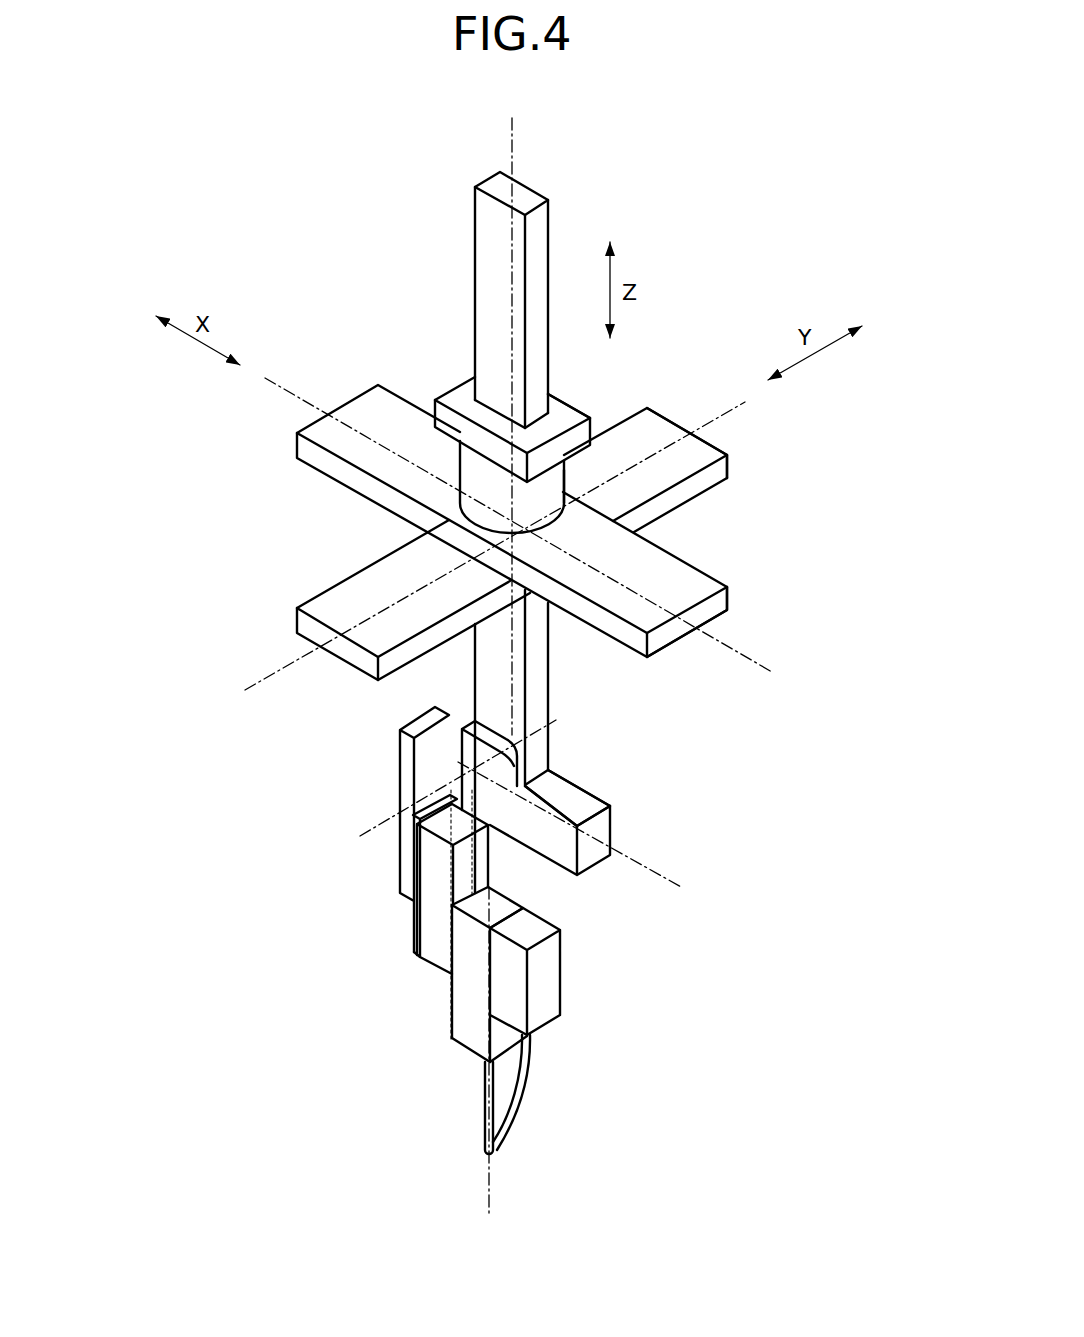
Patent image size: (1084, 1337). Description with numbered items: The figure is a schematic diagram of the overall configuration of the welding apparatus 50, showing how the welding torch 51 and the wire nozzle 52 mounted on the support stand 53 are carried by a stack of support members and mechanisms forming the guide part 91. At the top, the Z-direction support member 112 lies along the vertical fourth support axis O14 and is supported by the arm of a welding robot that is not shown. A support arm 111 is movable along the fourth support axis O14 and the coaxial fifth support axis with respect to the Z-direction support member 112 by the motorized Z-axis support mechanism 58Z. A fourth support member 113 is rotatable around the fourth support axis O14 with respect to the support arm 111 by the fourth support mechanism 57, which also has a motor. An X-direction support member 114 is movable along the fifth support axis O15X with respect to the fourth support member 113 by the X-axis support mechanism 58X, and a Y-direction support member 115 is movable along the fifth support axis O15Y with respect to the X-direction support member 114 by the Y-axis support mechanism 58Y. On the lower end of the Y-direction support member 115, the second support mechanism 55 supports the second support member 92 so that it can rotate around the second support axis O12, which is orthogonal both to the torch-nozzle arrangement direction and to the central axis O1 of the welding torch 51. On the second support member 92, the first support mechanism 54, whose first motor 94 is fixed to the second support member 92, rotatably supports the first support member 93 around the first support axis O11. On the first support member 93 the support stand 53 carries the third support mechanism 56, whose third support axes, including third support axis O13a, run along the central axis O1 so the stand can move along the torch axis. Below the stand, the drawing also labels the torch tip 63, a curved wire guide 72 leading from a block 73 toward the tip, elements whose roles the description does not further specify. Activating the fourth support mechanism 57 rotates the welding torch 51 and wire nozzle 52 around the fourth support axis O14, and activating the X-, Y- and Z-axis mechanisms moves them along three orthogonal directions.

The welding apparatus 50 is at (751, 745).
The welding torch 51 is at (448, 1036).
The wire nozzle 52 is at (542, 1053).
The support stand 53 is at (507, 891).
The first support mechanism 54 is at (414, 713).
The second support mechanism 55 is at (524, 747).
The third support mechanism 56 is at (410, 935).
The fourth support mechanism 57 is at (574, 480).
The X-axis support mechanism 58X is at (372, 503).
The Y-axis support mechanism 58Y is at (337, 580).
The Z-axis support mechanism 58Z is at (577, 394).
The needle 63 is at (487, 1140).
The curved guide 72 is at (513, 1117).
The guide block 73 is at (555, 985).
The guide part 91 is at (735, 507).
The second support member 92 is at (520, 771).
The first support member 93 is at (399, 777).
The first motor 94 is at (592, 843).
The support arm 111 is at (478, 247).
The Z-direction support member 112 is at (463, 395).
The fourth support member 113 is at (472, 468).
The X-direction support member 114 is at (670, 633).
The Y-direction support member 115 is at (552, 672).
The central axis O1 is at (490, 1200).
The first support axis O11 is at (683, 888).
The second support axis O12 is at (386, 815).
The third support axis O13a is at (455, 998).
The fourth support axis O14 is at (514, 150).
The fifth support axis O15X is at (743, 652).
The fifth support axis O15Y is at (273, 670).